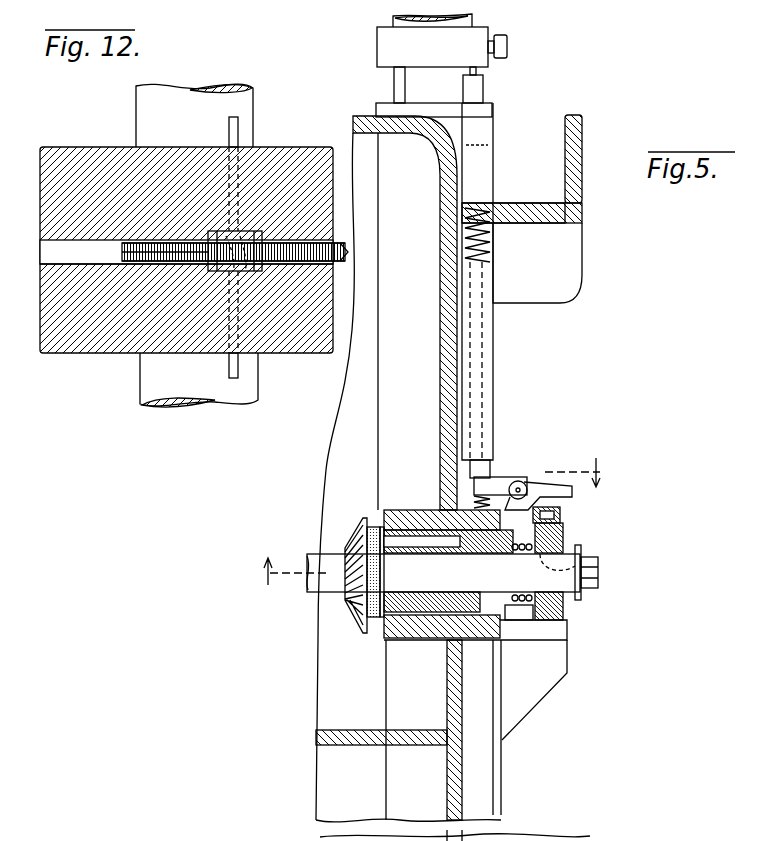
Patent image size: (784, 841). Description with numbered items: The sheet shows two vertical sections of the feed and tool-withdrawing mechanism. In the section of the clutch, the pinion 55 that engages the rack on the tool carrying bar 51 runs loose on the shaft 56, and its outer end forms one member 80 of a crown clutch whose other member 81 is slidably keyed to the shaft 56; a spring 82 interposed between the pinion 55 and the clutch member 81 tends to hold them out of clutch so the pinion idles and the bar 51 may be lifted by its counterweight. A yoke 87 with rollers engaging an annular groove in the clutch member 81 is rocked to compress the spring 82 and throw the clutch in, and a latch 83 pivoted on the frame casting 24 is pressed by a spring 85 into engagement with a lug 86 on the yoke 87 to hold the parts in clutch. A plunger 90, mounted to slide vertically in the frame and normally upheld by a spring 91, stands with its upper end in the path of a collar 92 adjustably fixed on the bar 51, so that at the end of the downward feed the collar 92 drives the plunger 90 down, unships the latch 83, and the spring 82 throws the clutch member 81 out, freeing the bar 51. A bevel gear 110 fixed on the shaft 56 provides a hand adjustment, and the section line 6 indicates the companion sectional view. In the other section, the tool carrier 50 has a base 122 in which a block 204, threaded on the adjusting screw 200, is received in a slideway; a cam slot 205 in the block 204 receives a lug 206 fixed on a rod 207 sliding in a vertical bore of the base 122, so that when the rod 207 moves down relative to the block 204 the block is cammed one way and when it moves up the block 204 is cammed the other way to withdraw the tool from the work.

In FIG. 12, the tool carrier 50 is at (260, 147).
In FIG. 12, the tool carrying bar 51 is at (146, 108).
In FIG. 5, the tool carrying bar 51 is at (405, 80).
In FIG. 12, the base of the tool carrier 122 is at (102, 346).
In FIG. 12, the screw 200 is at (341, 240).
In FIG. 12, the block 204 is at (224, 236).
In FIG. 12, the cam slot 205 is at (262, 265).
In FIG. 12, the lug 206 is at (232, 270).
In FIG. 12, the rod 207 is at (238, 124).
In FIG. 5, the collar 92 is at (388, 47).
In FIG. 5, the plunger 90 is at (483, 84).
In FIG. 5, the frame casting 24 is at (368, 124).
In FIG. 5, the spring 91 is at (490, 240).
In FIG. 5, the spring 85 is at (474, 497).
In FIG. 5, the latch 83 is at (548, 492).
In FIG. 5, the section line 6- 6 is at (430, 522).
In FIG. 5, the bevel gear 110 is at (358, 528).
In FIG. 5, the clutch member 81 is at (563, 537).
In FIG. 5, the lug 86 is at (548, 514).
In FIG. 5, the yoke 87 is at (562, 522).
In FIG. 5, the shaft 56 is at (567, 573).
In FIG. 5, the spring 82 is at (563, 608).
In FIG. 5, the clutch member 80 is at (520, 622).
In FIG. 5, the pinion 55 is at (440, 622).